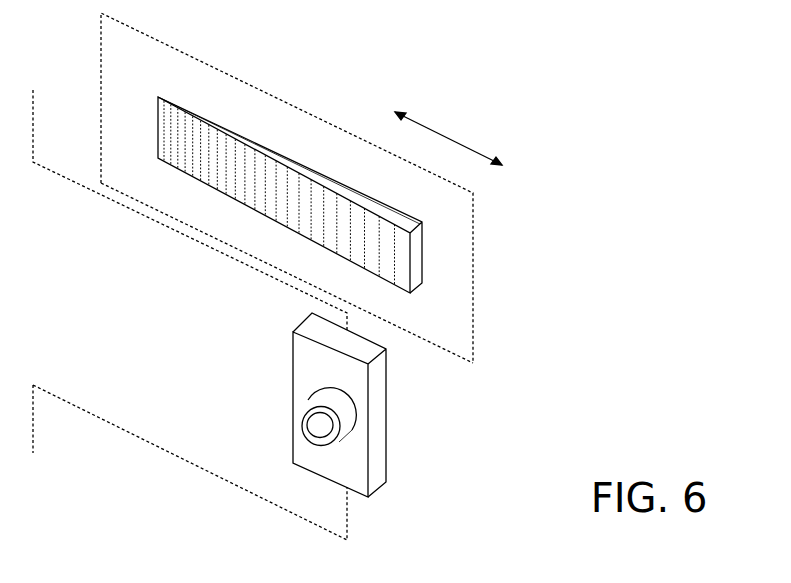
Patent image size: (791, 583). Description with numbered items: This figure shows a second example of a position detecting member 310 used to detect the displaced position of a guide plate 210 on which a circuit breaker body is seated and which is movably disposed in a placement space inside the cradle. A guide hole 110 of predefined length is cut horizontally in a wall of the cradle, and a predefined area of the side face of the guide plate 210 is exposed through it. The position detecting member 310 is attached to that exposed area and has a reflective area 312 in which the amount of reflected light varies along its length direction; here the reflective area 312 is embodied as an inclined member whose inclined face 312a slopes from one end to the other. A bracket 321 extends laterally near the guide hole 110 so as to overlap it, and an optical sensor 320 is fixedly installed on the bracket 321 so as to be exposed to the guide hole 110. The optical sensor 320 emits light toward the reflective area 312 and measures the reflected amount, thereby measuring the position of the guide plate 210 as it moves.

The guide hole 110 is at (119, 426).
The guide plate 210 is at (448, 220).
The position detecting member 310 is at (290, 153).
The reflective area 312 is at (250, 140).
The inclined face 312a is at (303, 184).
The optical sensor 320 is at (313, 408).
The bracket 321 is at (308, 353).